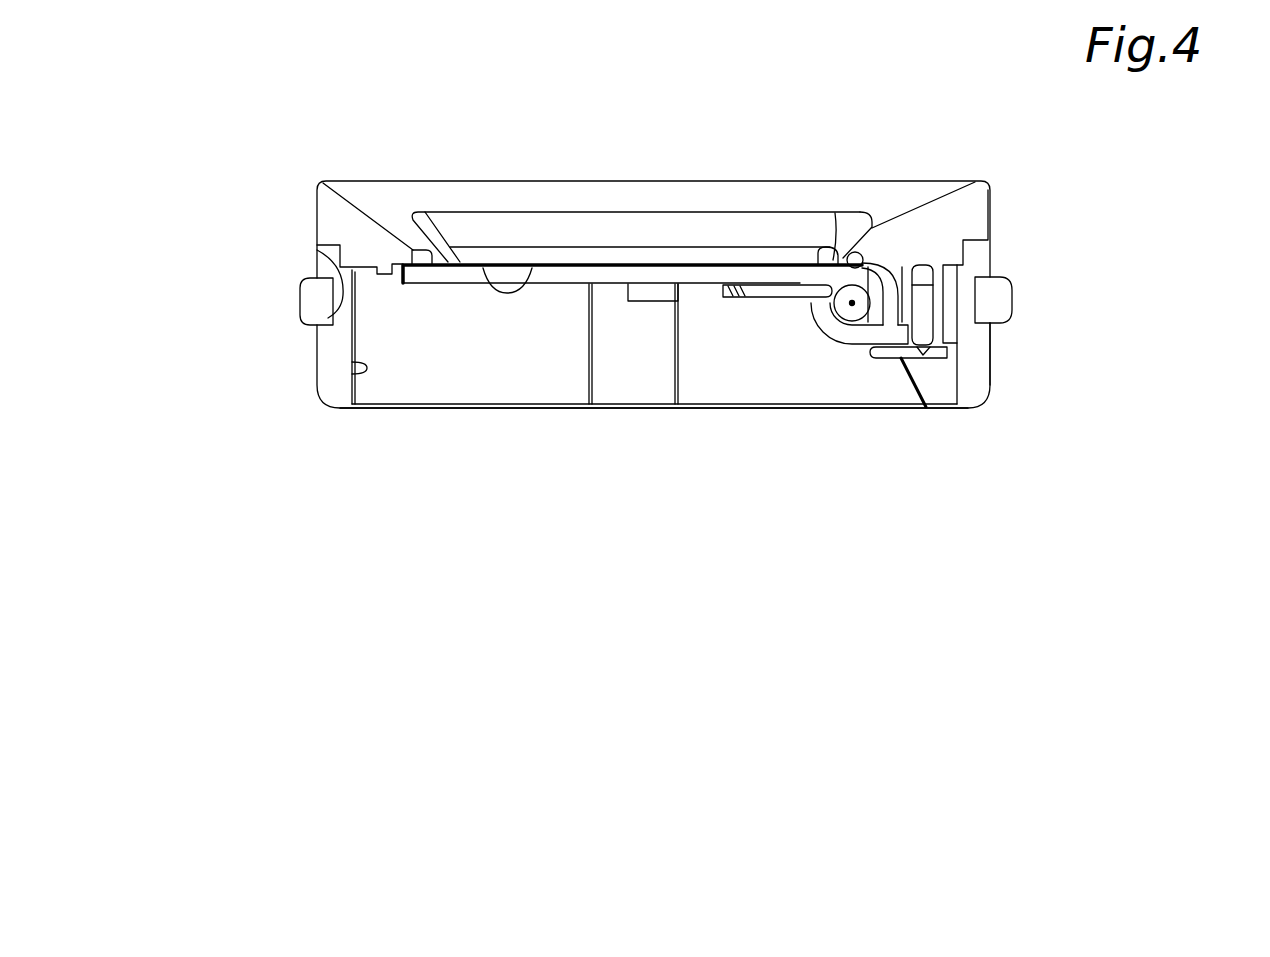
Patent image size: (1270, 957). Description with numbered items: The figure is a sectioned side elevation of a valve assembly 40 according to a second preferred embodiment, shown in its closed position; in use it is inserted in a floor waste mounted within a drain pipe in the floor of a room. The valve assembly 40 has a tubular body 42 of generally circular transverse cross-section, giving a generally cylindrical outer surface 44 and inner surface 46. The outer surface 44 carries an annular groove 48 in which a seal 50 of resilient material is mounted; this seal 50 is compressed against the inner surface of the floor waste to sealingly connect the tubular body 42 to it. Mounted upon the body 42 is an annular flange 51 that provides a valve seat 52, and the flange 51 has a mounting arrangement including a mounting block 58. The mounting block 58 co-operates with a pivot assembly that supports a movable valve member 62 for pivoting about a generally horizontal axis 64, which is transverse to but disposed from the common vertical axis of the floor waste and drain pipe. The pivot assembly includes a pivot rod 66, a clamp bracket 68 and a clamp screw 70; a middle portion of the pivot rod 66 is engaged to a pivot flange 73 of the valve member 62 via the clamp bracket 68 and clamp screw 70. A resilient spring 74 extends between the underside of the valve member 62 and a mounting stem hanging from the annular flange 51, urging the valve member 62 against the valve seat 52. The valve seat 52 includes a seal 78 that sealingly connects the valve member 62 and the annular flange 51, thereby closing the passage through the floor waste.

The valve assembly 40 is at (1122, 181).
The tubular body 42 is at (990, 259).
The outer surface 44 is at (995, 350).
The inner surface 46 is at (352, 374).
The annular groove 48 is at (317, 250).
The seal 50 is at (1013, 300).
The annular flange 51 is at (927, 204).
The valve seat 52 is at (483, 268).
The mounting block 58 is at (880, 358).
The movable valve member 62 is at (467, 283).
The horizontal axis 64 is at (833, 320).
The pivot rod 66 is at (845, 309).
The clamp bracket 68 is at (847, 358).
The clamp screw 70 is at (941, 347).
The pivot flange 73 is at (890, 265).
The resilient spring 74 is at (770, 297).
The seal 78 is at (408, 258).